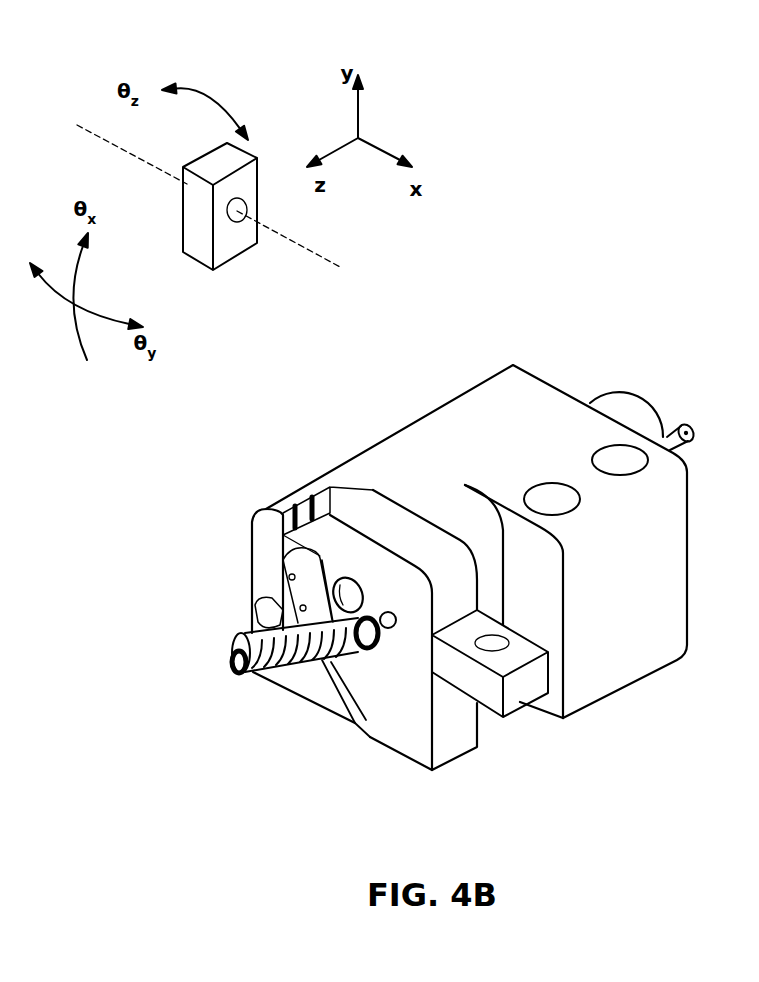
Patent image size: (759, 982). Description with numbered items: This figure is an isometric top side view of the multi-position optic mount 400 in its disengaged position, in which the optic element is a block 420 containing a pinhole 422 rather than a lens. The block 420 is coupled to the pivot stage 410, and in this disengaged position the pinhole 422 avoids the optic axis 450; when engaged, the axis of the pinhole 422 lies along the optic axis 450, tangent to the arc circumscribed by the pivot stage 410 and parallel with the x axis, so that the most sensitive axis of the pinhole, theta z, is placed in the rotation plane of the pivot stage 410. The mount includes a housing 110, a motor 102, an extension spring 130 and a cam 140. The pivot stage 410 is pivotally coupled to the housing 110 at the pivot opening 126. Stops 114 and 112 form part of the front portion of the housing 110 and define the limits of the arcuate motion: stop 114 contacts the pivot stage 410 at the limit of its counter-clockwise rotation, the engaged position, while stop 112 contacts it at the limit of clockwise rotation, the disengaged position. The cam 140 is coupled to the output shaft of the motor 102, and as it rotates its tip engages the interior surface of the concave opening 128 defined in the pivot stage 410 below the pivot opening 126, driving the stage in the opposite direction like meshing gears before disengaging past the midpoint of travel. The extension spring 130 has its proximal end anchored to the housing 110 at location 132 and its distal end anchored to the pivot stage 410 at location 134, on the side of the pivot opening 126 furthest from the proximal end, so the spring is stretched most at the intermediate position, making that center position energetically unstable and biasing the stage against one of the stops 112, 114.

The multi-position optic mount 400 is at (647, 274).
The housing 110 is at (673, 605).
The motor 102 is at (625, 406).
The pivot stage 410 is at (250, 608).
The stop 112 is at (335, 708).
The stop 114 is at (283, 513).
The pivot opening 126 is at (345, 600).
The concave opening 128 is at (286, 544).
The extension spring 130 is at (257, 643).
The proximal end anchor location 132 is at (234, 652).
The distal end anchor location 134 is at (333, 660).
The cam 140 is at (280, 604).
The block 420 is at (351, 490).
The pinhole 422 is at (237, 217).
The optic axis 450 is at (312, 249).